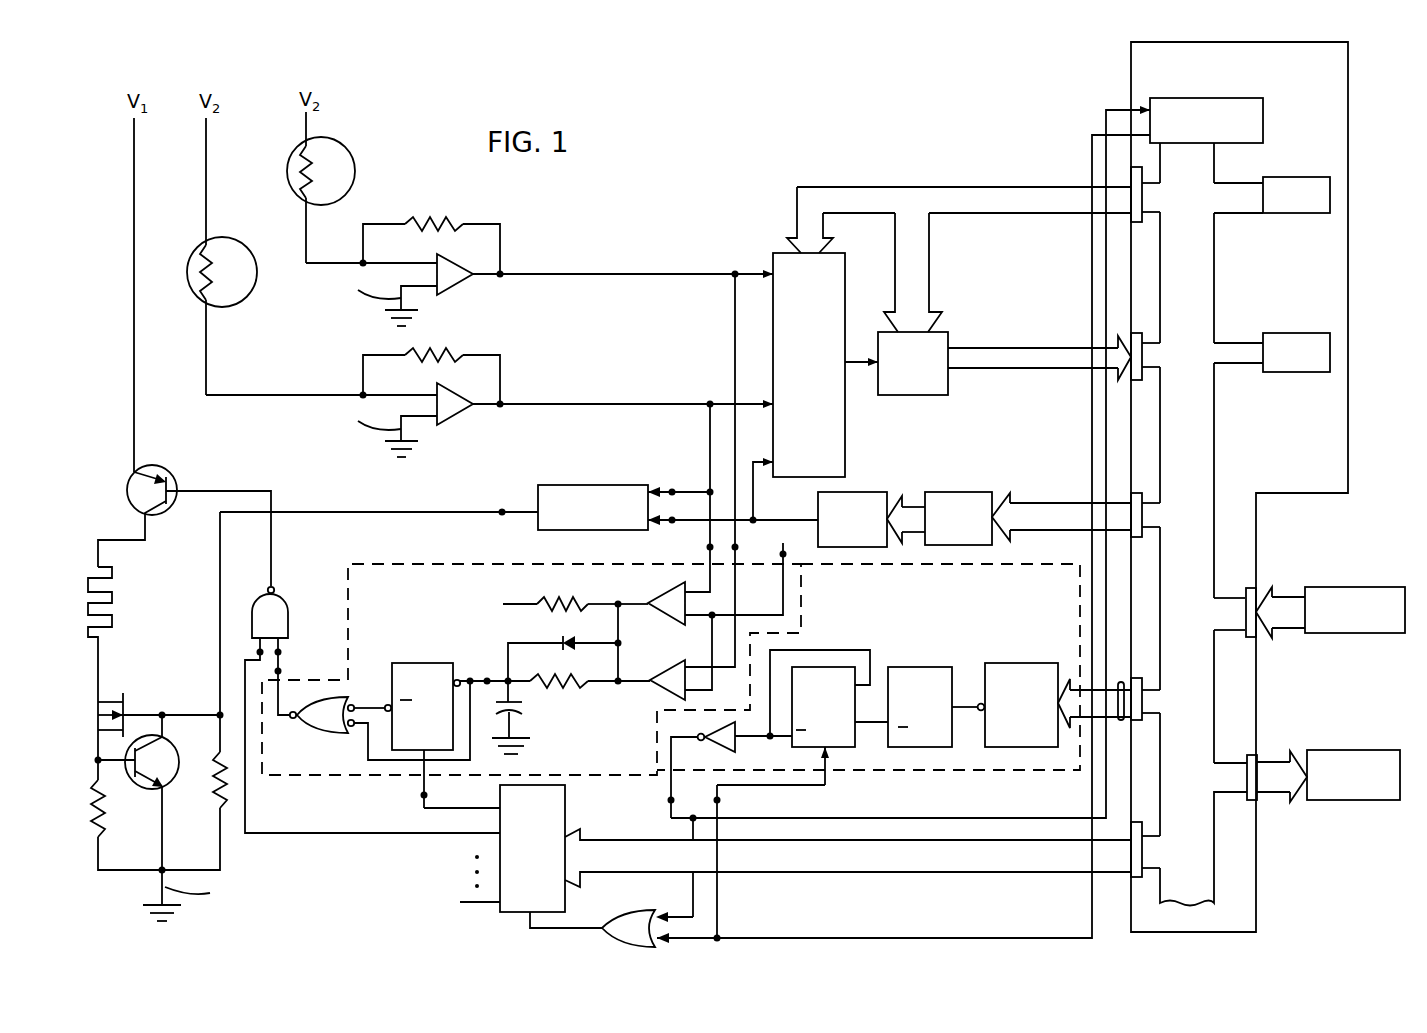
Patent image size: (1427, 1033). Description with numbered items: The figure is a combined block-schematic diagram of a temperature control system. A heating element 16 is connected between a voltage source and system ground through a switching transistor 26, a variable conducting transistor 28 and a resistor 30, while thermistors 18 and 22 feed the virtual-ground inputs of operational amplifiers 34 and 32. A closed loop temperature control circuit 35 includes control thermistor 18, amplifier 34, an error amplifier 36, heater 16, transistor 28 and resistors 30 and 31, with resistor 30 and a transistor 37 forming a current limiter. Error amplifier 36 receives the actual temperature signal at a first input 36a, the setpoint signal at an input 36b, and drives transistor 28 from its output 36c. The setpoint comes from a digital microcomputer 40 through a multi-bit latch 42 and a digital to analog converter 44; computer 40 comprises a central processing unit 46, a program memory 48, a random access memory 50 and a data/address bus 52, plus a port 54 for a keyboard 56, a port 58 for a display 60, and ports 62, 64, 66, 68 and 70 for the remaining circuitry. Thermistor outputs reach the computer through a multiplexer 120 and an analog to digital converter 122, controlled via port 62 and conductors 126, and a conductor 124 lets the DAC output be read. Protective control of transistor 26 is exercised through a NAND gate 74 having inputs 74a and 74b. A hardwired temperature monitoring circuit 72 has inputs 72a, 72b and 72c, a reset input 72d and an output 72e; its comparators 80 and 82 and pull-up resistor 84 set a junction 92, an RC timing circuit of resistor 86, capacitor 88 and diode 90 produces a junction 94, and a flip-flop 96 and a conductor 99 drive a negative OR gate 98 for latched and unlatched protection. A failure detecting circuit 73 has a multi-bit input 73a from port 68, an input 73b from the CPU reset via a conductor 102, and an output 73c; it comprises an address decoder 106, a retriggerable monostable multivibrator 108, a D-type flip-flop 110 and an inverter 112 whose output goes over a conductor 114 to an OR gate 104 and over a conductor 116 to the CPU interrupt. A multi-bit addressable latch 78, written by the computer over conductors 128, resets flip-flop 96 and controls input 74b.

The heating element 16 is at (112, 600).
The control thermistor 18 is at (257, 272).
The thermistor 22 is at (355, 172).
The switching transistor 26 is at (177, 485).
The variable conducting transistor 28 is at (130, 700).
The resistor 30 is at (110, 795).
The resistor 31 is at (217, 795).
The operational amplifier 32 is at (460, 288).
The operational amplifier 34 is at (460, 418).
The closed loop temperature control circuit 35 is at (455, 492).
The error amplifier 36 is at (577, 486).
The first input 36a is at (672, 490).
The input 36b is at (672, 518).
The output 36c is at (502, 511).
The transistor 37 is at (180, 758).
The digital microcomputer 40 is at (1256, 556).
The multi-bit latch 42 is at (948, 492).
The digital to analog converter 44 is at (855, 492).
The central processing unit 46 is at (1263, 130).
The program memory 48 is at (1275, 213).
The random access read/write memory 50 is at (1275, 333).
The data/address bus 52 is at (1214, 440).
The port 54 is at (1244, 590).
The keyboard 56 is at (1325, 587).
The port 58 is at (1247, 760).
The display 60 is at (1325, 750).
The port 62 is at (1142, 200).
The port 64 is at (1142, 380).
The port 66 is at (1142, 537).
The output port 68 is at (1138, 678).
The port 70 is at (1138, 822).
The first temperature monitoring circuit 72 is at (425, 560).
The input 72a is at (710, 547).
The input 72b is at (735, 547).
The input 72c is at (783, 554).
The input 72d is at (424, 795).
The output 72e is at (278, 671).
The failure detecting circuit 73 is at (1002, 553).
The multi-bit input 73a is at (1121, 720).
The input 73b is at (717, 803).
The output 73c is at (671, 800).
The NAND gate 74 is at (288, 612).
The input 74a is at (278, 652).
The input 74b is at (258, 652).
The multi-bit addressable latch 78 is at (512, 914).
The first comparator 80 is at (663, 610).
The second comparator 82 is at (667, 689).
The pull-up resistor 84 is at (585, 598).
The resistor 86 is at (588, 690).
The capacitor 88 is at (518, 712).
The diode 90 is at (563, 640).
The junction 92 is at (628, 681).
The junction 94 is at (487, 681).
The flip-flop 96 is at (413, 663).
The negative OR gate 98 is at (340, 733).
The conductor 99 is at (473, 757).
The conductor 102 is at (1090, 167).
The OR gate 104 is at (610, 917).
The address decoder 106 is at (1003, 663).
The retriggerable monostable multivibrator 108 is at (920, 667).
The D-type flip-flop 110 is at (823, 667).
The inverter 112 is at (718, 753).
The conductor 114 is at (690, 840).
The conductor 116 is at (1106, 122).
The multiplexer 120 is at (773, 256).
The analog to digital converter 122 is at (948, 338).
The conductor 124 is at (753, 488).
The set of conductors 126 is at (973, 197).
The set of conductors 128 is at (945, 873).